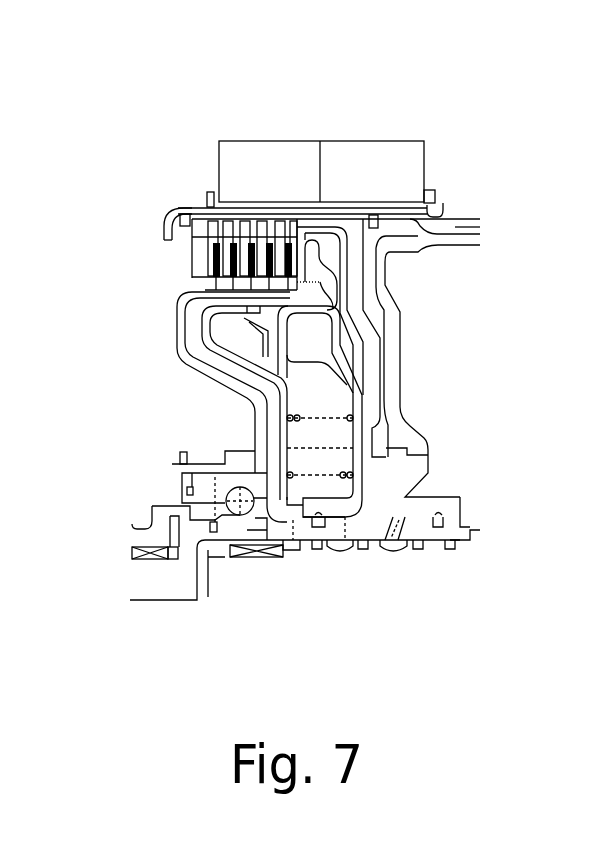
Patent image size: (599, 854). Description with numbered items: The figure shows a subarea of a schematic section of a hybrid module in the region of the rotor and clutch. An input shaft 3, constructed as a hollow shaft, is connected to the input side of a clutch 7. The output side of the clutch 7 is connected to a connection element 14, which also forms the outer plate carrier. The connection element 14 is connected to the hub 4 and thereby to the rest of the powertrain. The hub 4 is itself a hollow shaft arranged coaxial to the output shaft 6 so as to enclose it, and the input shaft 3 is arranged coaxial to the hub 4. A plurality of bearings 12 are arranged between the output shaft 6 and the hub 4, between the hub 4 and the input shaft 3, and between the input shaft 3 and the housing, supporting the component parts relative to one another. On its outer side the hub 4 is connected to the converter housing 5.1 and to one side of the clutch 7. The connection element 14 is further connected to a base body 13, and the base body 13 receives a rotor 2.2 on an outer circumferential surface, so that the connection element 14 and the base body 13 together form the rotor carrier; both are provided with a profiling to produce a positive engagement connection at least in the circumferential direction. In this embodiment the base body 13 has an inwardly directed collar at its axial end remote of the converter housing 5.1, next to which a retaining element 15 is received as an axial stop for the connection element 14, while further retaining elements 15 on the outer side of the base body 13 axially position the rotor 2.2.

The rotor 2.2 is at (342, 158).
The base body 13 is at (373, 213).
The retaining element 15 is at (204, 196).
The clutch 7 is at (176, 258).
The input shaft 3 is at (170, 515).
The connection element 14 is at (353, 283).
The converter housing 5.1 is at (455, 227).
The bearing 12 is at (243, 507).
The output shaft 6 is at (335, 572).
The hub 4 is at (368, 533).